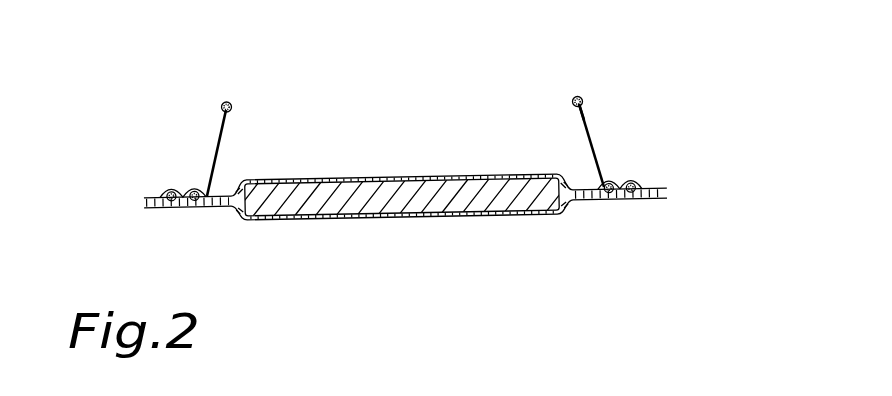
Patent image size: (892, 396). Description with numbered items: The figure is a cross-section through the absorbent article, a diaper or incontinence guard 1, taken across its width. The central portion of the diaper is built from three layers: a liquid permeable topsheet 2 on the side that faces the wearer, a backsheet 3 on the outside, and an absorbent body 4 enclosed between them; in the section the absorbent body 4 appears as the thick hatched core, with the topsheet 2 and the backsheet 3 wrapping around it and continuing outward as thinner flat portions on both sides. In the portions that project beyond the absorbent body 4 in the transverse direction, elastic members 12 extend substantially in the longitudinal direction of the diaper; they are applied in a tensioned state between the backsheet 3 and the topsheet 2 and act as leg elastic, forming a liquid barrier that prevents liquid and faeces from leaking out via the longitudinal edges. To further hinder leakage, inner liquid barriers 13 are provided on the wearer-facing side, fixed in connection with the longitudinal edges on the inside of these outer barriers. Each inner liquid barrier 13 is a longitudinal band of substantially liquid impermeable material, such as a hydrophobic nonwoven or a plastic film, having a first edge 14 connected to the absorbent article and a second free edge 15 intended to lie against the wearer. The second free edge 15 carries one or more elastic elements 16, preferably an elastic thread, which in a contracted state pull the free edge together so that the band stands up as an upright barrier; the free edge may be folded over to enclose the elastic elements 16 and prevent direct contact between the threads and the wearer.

The incontinence guard 1 is at (734, 84).
The liquid permeable topsheet 2 is at (303, 178).
The backsheet 3 is at (443, 217).
The absorbent body 4 is at (413, 202).
The elastic members 12 is at (628, 198).
The inner liquid barriers 13 is at (597, 133).
The first edge 14 is at (604, 184).
The second free edge 15 is at (571, 102).
The elastic elements 16 is at (584, 102).